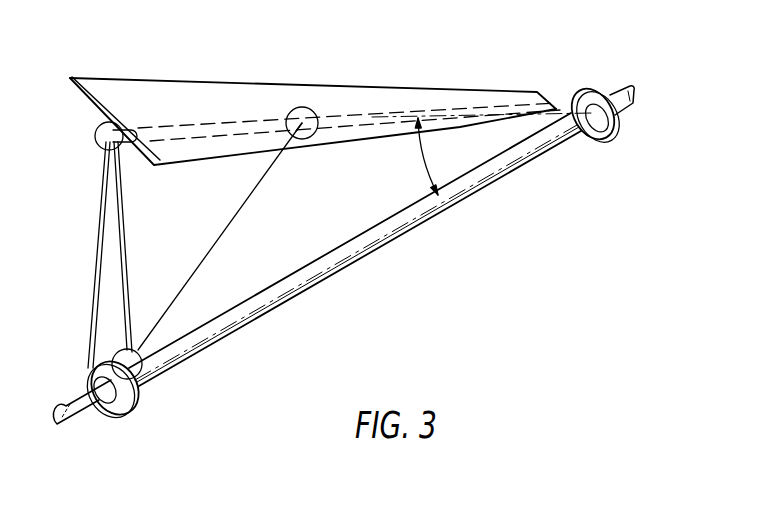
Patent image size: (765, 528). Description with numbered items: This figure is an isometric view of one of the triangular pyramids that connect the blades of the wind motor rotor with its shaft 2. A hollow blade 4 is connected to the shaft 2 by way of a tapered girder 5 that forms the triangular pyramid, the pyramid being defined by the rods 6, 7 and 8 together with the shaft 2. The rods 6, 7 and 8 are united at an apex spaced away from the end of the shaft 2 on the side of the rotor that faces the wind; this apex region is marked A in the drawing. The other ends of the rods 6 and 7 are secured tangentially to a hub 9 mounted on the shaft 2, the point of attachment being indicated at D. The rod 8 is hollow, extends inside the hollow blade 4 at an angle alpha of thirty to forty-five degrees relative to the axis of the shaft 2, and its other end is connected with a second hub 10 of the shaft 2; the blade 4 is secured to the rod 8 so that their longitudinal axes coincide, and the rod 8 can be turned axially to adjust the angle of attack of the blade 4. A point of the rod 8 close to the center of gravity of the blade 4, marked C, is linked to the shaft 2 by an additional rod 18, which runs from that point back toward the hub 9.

The shaft 2 is at (310, 274).
The hollow blade 4 is at (440, 91).
The tapered girder 5 is at (99, 196).
The rod 6 is at (126, 249).
The rod 7 is at (94, 276).
The rod 8 is at (558, 104).
The hub 9 is at (106, 412).
The second hub 10 is at (594, 136).
The additional rod 18 is at (237, 205).
The pulley axis A is at (101, 126).
The point C is at (300, 141).
The pivot D is at (126, 349).
The angle alpha is at (482, 154).